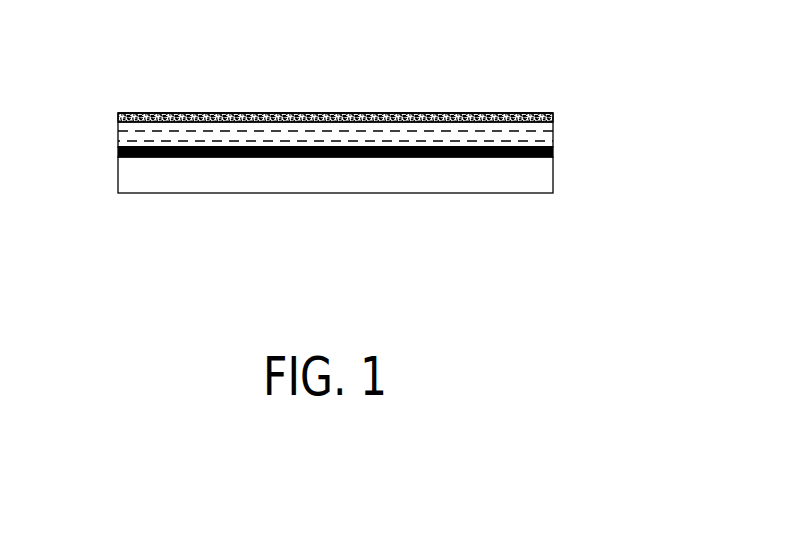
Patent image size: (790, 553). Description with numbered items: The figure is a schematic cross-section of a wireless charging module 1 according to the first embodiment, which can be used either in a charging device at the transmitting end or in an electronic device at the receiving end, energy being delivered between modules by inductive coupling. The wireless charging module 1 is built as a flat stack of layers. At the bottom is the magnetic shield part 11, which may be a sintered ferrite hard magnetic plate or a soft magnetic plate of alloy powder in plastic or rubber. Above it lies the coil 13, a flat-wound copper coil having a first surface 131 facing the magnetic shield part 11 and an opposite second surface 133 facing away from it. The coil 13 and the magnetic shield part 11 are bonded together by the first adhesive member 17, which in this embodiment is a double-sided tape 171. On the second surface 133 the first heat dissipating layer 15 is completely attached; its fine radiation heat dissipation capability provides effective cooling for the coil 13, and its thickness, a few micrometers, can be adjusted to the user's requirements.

The wireless charging module 1 is at (688, 58).
The magnetic shield part 11 is at (540, 181).
The coil 13 is at (538, 131).
The first surface 131 is at (447, 158).
The second surface 133 is at (483, 111).
The first heat dissipating layer 15 is at (117, 117).
The first adhesive member 17 is at (117, 150).
The double-sided tape 171 is at (554, 150).